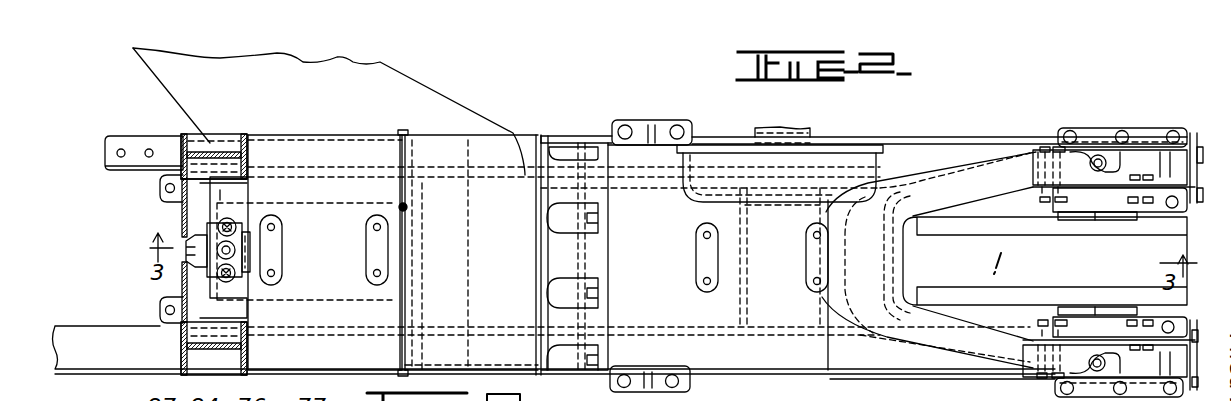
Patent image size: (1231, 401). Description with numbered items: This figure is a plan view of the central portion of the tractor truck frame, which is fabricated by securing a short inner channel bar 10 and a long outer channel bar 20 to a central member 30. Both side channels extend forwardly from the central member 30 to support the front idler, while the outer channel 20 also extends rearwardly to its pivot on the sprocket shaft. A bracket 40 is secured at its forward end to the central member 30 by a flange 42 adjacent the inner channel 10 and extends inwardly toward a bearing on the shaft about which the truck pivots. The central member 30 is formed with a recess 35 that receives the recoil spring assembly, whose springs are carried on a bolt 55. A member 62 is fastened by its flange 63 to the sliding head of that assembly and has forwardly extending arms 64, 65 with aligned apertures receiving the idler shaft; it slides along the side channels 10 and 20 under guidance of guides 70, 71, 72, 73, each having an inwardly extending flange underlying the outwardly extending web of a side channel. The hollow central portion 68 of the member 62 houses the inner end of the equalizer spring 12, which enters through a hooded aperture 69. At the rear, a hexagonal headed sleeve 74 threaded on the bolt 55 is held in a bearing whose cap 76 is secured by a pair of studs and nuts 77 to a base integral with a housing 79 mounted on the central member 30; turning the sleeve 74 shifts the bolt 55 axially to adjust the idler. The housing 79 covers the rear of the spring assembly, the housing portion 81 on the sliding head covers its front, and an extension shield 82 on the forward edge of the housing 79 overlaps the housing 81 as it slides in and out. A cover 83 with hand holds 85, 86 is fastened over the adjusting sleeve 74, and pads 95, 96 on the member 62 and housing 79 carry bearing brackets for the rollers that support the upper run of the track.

The inner channel bar 10 is at (899, 138).
The equalizer spring 12 is at (763, 130).
The outer channel bar 20 is at (65, 330).
The central member 30 is at (158, 189).
The recess 35 is at (637, 188).
The bracket 40 is at (282, 108).
The flange 42 is at (133, 167).
The bolt 55 is at (187, 248).
The member 62 is at (762, 269).
The flange 63 is at (610, 145).
The forwardly extending arm 64 is at (957, 173).
The forwardly extending arm 65 is at (930, 332).
The central portion 68 is at (723, 210).
The hooded aperture 69 is at (817, 168).
The guide 70 is at (637, 378).
The guide 71 is at (1137, 387).
The guide 72 is at (636, 126).
The guide 73 is at (1093, 137).
The headed sleeve 74 is at (197, 238).
The cap 76 is at (237, 253).
The studs and nuts 77 is at (237, 222).
The housing 79 is at (357, 195).
The housing portion 81 is at (710, 256).
The extension shield 82 is at (488, 231).
The cover 83 is at (180, 284).
The hand hold 85 is at (200, 353).
The hand hold 86 is at (217, 150).
The pad 95 is at (710, 267).
The pad 96 is at (273, 267).